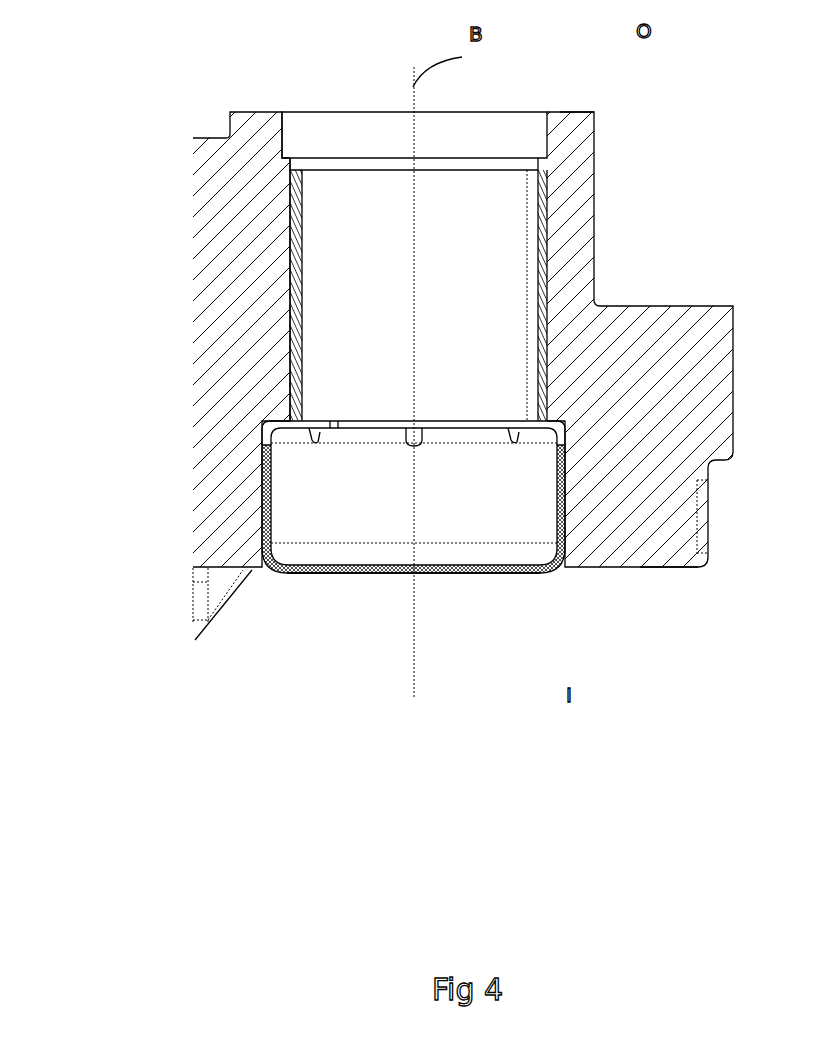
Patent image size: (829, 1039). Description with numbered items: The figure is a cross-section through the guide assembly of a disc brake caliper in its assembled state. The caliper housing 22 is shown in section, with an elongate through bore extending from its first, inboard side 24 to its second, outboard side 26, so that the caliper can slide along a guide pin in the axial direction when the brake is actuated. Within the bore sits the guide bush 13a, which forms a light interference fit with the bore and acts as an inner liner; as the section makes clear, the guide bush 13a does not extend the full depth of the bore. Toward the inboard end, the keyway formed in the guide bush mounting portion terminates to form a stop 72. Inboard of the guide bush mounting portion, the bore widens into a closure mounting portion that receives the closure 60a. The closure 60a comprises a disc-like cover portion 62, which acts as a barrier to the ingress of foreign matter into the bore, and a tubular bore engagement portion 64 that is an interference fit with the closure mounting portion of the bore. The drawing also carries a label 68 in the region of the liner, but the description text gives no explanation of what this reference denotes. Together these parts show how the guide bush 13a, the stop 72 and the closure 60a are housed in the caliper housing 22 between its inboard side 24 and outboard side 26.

The guide bush 13a is at (328, 197).
The stop 72 is at (540, 158).
The second side 26 is at (578, 112).
The caliper housing 22 is at (678, 333).
The sleeve liner 68 is at (290, 421).
The bore engagement portion 64 is at (362, 514).
The disc-like cover portion 62 is at (497, 573).
The closure 60a is at (325, 574).
The first side 24 is at (673, 568).